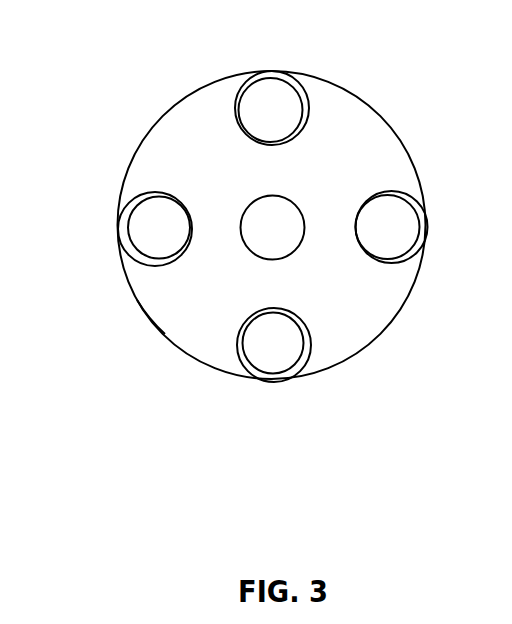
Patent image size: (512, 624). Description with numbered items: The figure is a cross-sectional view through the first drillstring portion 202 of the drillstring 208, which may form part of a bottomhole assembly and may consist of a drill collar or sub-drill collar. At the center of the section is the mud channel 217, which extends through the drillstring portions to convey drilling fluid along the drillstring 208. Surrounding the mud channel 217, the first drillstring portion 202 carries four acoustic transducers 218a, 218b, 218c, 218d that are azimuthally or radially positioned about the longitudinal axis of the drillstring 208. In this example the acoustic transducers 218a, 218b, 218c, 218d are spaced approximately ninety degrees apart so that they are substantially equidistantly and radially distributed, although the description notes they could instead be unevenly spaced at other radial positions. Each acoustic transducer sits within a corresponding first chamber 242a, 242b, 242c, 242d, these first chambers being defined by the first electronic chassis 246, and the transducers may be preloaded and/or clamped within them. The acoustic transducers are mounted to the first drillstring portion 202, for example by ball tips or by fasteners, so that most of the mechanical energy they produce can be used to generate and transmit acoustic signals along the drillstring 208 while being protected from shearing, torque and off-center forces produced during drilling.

The drillstring 208 is at (126, 54).
The first drillstring portion 202 is at (350, 96).
The first electronic chassis 246 is at (182, 343).
The mud channel 217 is at (283, 243).
The acoustic transducer 218a is at (257, 90).
The acoustic transducer 218b is at (255, 370).
The acoustic transducer 218c is at (140, 256).
The acoustic transducer 218d is at (412, 248).
The first chamber 242a is at (263, 72).
The first chamber 242b is at (278, 382).
The first chamber 242c is at (128, 210).
The first chamber 242d is at (472, 192).